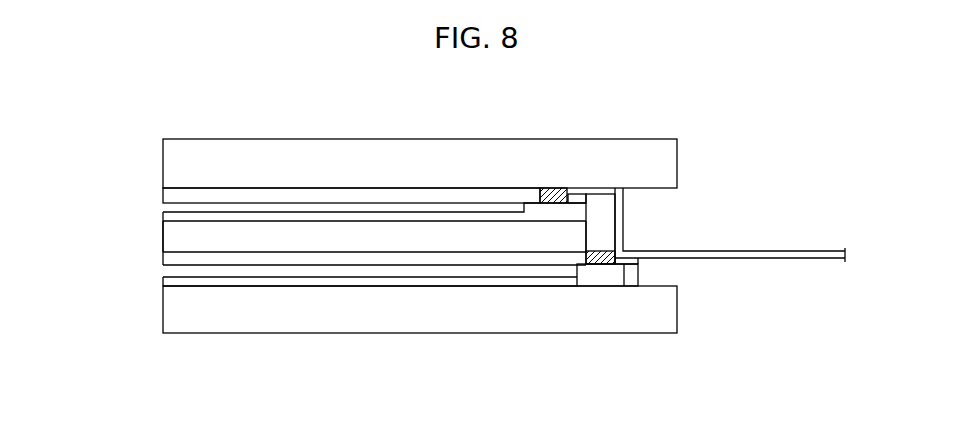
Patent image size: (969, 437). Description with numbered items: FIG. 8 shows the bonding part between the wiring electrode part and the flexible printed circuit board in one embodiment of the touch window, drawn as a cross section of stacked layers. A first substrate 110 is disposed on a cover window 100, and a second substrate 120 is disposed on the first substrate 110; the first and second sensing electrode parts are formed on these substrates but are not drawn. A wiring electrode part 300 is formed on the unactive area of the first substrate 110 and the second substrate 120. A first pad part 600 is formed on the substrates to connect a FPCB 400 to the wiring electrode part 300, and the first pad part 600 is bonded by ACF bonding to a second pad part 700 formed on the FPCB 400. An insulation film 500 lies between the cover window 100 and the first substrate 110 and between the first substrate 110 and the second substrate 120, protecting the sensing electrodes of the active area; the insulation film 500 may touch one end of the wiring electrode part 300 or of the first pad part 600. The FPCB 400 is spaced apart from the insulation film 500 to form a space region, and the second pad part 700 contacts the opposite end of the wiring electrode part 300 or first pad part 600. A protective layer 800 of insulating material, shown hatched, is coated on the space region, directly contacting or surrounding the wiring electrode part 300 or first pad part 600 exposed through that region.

The cover window 100 is at (172, 162).
The first substrate 110 is at (172, 237).
The second substrate 120 is at (172, 309).
The wiring electrode part 300 is at (172, 218).
The FPCB 400 is at (787, 251).
The insulation film 500 is at (172, 195).
The first pad part 600 is at (552, 213).
The second pad part 700 is at (578, 194).
The protective layer 800 is at (559, 188).